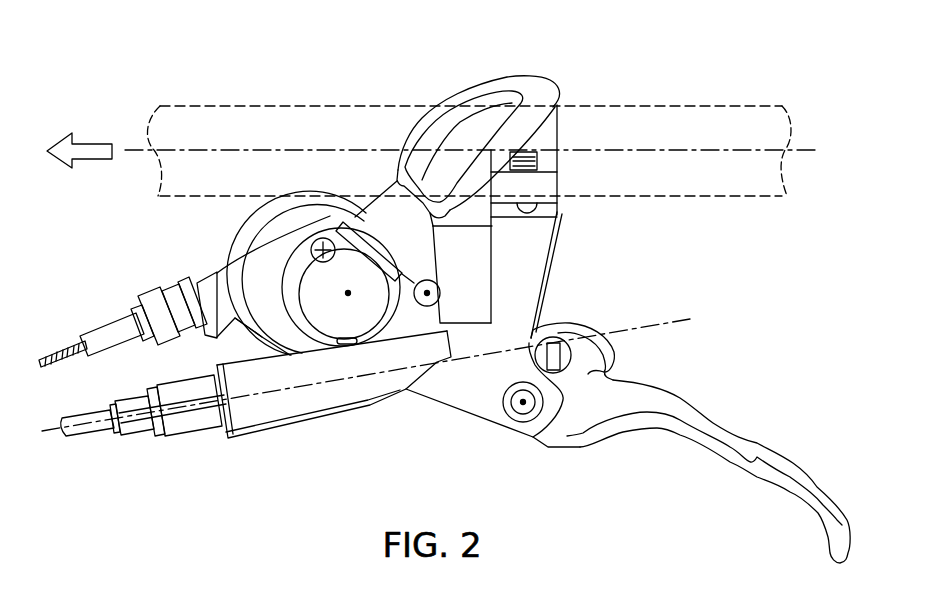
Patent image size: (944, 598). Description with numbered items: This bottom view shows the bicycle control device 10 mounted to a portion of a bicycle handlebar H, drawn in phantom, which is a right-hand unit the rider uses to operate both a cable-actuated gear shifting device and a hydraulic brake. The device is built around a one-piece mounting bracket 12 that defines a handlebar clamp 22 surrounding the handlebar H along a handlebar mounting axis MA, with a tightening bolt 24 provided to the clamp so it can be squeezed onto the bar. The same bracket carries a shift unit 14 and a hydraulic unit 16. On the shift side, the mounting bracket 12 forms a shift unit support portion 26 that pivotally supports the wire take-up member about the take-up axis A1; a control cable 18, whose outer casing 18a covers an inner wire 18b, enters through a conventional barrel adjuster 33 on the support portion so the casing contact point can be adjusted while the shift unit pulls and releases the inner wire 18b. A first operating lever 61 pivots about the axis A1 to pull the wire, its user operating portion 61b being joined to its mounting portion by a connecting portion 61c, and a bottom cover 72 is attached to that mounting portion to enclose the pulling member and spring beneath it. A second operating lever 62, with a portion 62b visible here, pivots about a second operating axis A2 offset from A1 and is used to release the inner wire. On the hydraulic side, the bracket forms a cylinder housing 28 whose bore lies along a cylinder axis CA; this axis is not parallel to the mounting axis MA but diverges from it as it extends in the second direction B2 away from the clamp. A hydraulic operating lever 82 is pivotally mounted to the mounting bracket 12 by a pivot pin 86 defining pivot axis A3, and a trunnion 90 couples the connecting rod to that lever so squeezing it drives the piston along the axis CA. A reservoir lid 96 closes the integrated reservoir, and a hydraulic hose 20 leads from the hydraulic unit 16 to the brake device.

The bicycle control device 10 is at (116, 497).
The mounting bracket 12 is at (566, 128).
The shift unit 14 is at (237, 250).
The hydraulic unit 16 is at (269, 440).
The control cable 18 is at (136, 272).
The outer casing 18a is at (110, 325).
The inner wire 18b is at (63, 347).
The hydraulic hose 20 is at (90, 436).
The handlebar clamp 22 is at (558, 184).
The tightening bolt 24 is at (538, 161).
The shift unit support portion 26 is at (254, 336).
The cylinder housing 28 is at (322, 418).
The barrel adjuster 33 is at (157, 290).
The first operating lever 61 is at (462, 96).
The user operating portion 61b is at (522, 75).
The connecting portion 61c is at (376, 198).
The second operating lever 62 is at (553, 316).
The pivot end of second operating member 62b is at (607, 373).
The bottom cover 72 is at (283, 265).
The hydraulic operating lever 82 is at (718, 470).
The pivot pin 86 is at (531, 418).
The trunnion 90 is at (567, 366).
The reservoir lid 96 is at (554, 246).
The take-up axis A1 is at (349, 296).
The second operating axis A2 is at (441, 292).
The pivot axis A3 is at (521, 405).
The second direction B2 is at (93, 160).
The cylinder axis CA is at (669, 316).
The bicycle handlebar H is at (680, 97).
The handlebar mounting axis MA is at (815, 152).